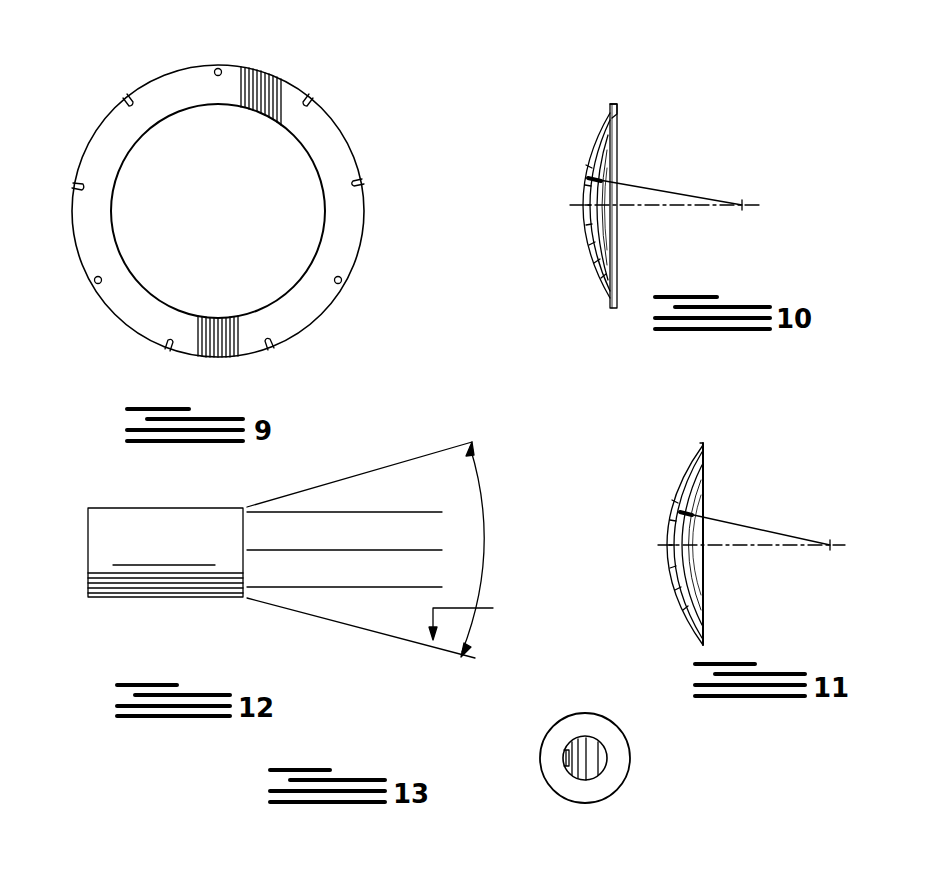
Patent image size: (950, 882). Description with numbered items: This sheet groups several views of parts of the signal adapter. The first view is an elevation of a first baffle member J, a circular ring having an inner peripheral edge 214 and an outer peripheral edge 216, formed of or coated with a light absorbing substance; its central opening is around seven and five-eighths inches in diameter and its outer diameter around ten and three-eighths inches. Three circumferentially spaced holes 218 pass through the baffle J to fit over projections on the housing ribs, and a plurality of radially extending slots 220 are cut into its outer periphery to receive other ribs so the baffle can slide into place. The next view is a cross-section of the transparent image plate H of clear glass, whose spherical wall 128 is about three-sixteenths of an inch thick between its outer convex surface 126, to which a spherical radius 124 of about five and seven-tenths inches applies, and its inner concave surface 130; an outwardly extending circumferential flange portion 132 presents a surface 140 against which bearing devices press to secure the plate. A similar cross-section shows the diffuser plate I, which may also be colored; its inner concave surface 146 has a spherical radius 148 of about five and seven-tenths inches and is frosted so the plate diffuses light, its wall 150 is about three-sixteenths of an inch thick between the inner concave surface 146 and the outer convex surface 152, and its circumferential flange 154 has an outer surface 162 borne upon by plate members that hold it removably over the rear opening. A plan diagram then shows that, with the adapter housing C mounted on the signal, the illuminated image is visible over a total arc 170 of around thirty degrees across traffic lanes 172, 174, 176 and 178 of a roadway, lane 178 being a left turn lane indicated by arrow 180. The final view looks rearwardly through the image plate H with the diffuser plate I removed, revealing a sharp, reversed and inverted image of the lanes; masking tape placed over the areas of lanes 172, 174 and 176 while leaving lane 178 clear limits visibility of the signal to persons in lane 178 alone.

In FIG. 9, the inner peripheral edge 214 is at (308, 155).
In FIG. 9, the outer peripheral edge 216 is at (354, 152).
In FIG. 9, the holes 218 is at (222, 70).
In FIG. 9, the radially extending slots 220 is at (128, 99).
In FIG. 9, the first baffle member J is at (374, 249).
In FIG. 10, the spherical radius 124 is at (697, 196).
In FIG. 10, the outer convex surface 126 is at (590, 162).
In FIG. 10, the spherical wall 128 is at (588, 250).
In FIG. 10, the inner concave surface 130 is at (592, 247).
In FIG. 10, the circumferential flange portion 132 is at (614, 105).
In FIG. 10, the surface 140 is at (620, 115).
In FIG. 10, the image plate H is at (622, 149).
In FIG. 13, the image plate H is at (617, 765).
In FIG. 11, the inner concave surface 146 is at (668, 596).
In FIG. 11, the spherical radius 148 is at (797, 537).
In FIG. 11, the wall 150 is at (682, 478).
In FIG. 11, the outer convex surface 152 is at (682, 590).
In FIG. 11, the circumferential flange 154 is at (705, 450).
In FIG. 11, the outer surface 162 is at (698, 447).
In FIG. 11, the diffuser plate I is at (717, 476).
In FIG. 12, the total arc 170 is at (483, 508).
In FIG. 12, the traffic lane 172 is at (420, 468).
In FIG. 13, the traffic lane 172 is at (603, 748).
In FIG. 12, the traffic lane 174 is at (403, 523).
In FIG. 13, the traffic lane 174 is at (590, 775).
In FIG. 12, the traffic lane 176 is at (355, 573).
In FIG. 13, the traffic lane 176 is at (578, 740).
In FIG. 12, the traffic lane 178 is at (402, 623).
In FIG. 13, the traffic lane 178 is at (570, 748).
In FIG. 12, the arrow 180 is at (458, 607).
In FIG. 13, the arrow 180 is at (567, 760).
In FIG. 12, the adapter housing C is at (150, 606).
In FIG. 13, the adapter housing C is at (648, 749).